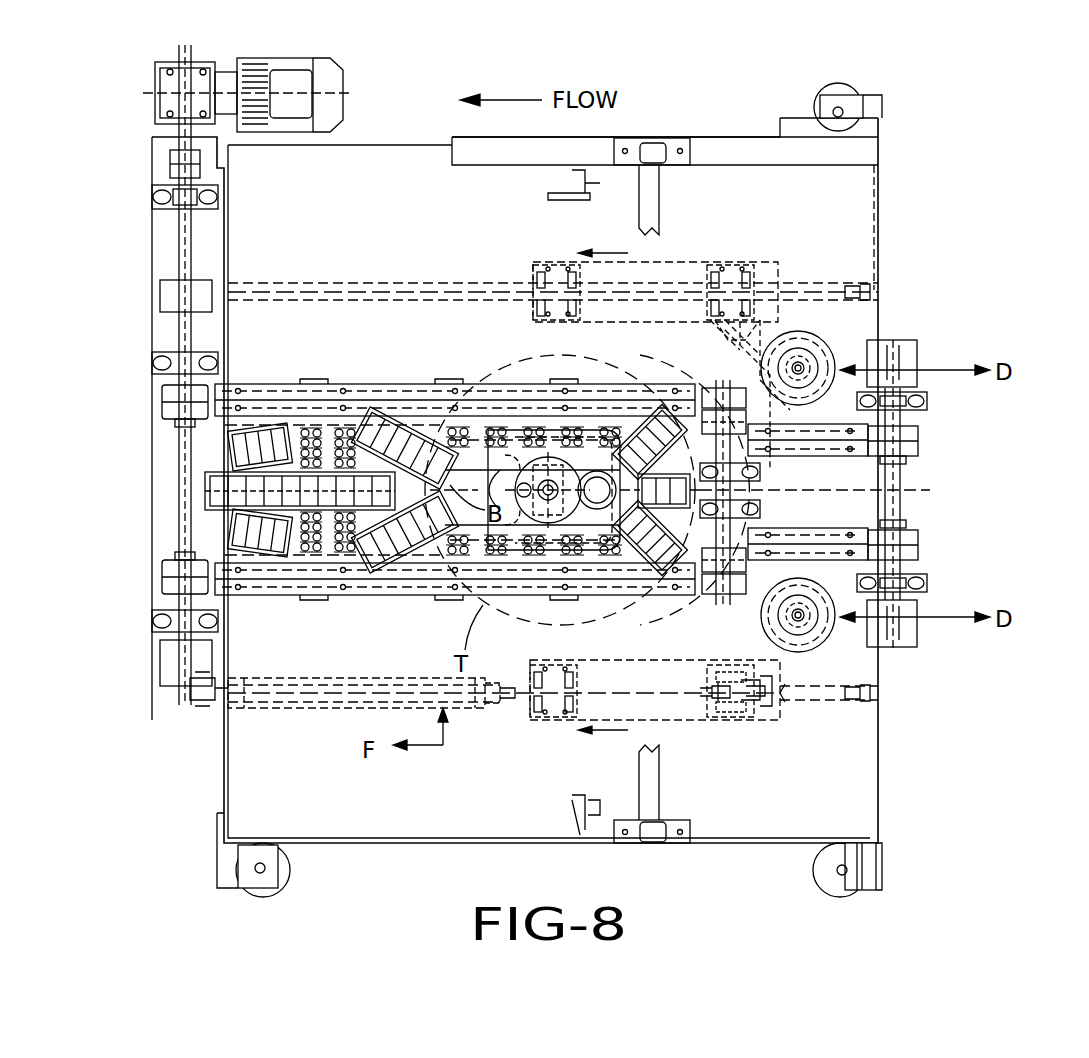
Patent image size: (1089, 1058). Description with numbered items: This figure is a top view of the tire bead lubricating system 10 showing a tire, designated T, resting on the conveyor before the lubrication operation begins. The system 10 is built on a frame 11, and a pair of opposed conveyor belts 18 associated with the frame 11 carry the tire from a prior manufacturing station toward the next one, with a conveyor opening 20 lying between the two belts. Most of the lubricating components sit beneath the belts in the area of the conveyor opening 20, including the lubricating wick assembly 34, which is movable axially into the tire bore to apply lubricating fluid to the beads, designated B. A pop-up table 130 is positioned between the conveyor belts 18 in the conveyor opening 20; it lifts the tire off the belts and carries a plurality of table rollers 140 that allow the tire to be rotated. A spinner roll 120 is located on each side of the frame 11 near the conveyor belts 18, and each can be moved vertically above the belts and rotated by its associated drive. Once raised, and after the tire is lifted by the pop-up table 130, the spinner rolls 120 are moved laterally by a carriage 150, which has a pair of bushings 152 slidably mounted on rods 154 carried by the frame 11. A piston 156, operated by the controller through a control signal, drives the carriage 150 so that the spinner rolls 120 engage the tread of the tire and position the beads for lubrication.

The tire bead lubricating system 10 is at (985, 118).
The frame 11 is at (710, 152).
The conveyor belts 18 is at (333, 392).
The conveyor opening 20 is at (730, 478).
The lubricating wick assembly 34 is at (527, 470).
The spinner roll 120 is at (818, 348).
The pop-up table 130 is at (218, 510).
The table rollers 140 is at (300, 437).
The carriage 150 is at (530, 262).
The bushings 152 is at (545, 260).
The rods 154 is at (312, 282).
The piston 156 is at (312, 710).